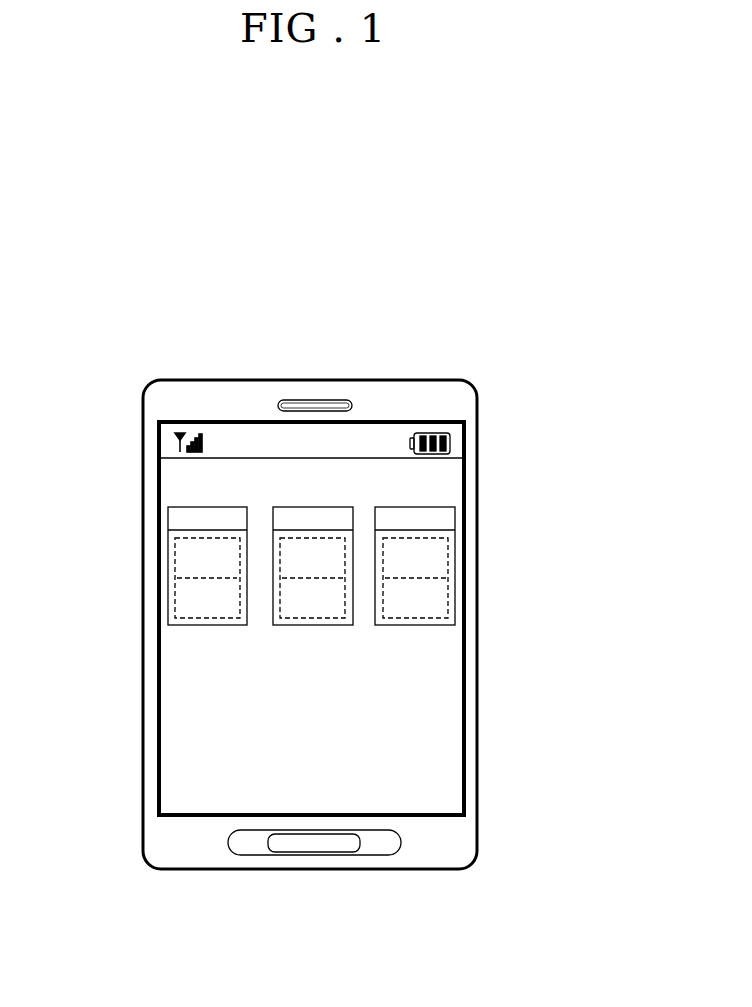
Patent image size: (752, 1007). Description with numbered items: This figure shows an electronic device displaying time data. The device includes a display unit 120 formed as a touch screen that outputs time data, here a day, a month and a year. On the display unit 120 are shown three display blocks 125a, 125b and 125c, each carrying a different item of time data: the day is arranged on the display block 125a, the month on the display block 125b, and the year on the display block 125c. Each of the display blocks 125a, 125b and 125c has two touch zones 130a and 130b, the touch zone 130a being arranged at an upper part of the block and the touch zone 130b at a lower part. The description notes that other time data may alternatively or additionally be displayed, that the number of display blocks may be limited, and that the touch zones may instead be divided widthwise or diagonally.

The display unit 120 is at (465, 448).
The display block 125a is at (146, 591).
The display block 125b is at (333, 512).
The display block 125c is at (455, 512).
The touch zone 130a is at (174, 539).
The touch zone 130b is at (176, 587).